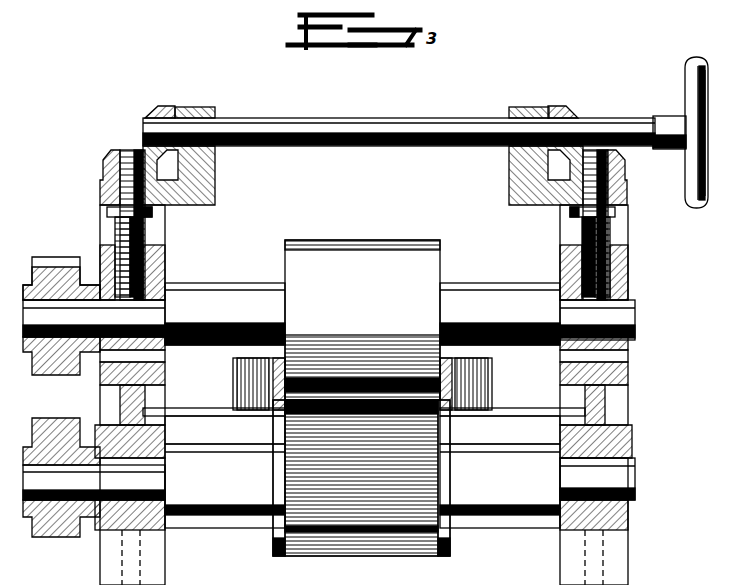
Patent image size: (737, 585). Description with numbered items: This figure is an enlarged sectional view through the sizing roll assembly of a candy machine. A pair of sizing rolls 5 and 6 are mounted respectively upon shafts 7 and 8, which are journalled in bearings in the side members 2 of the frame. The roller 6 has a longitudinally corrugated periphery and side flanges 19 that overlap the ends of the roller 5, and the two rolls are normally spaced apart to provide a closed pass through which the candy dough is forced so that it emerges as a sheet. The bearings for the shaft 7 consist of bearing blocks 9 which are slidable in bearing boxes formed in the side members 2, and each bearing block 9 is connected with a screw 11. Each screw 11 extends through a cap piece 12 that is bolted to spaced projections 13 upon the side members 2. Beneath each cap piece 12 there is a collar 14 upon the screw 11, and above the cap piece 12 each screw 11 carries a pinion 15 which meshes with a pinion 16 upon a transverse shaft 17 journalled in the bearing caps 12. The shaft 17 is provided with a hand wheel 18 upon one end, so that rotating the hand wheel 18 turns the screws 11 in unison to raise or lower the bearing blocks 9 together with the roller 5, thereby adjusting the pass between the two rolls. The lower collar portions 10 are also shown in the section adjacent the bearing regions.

The side members 2 is at (110, 378).
The sizing roll 5 is at (325, 256).
The sizing roll 6 is at (300, 548).
The shaft 7 is at (622, 312).
The shaft 8 is at (630, 470).
The bearing blocks 9 is at (105, 272).
The collar 10 is at (150, 358).
The screw 11 is at (125, 226).
The cap piece 12 is at (217, 184).
The spaced projections 13 is at (155, 228).
The collar 14 is at (72, 203).
The pinion 15 is at (112, 150).
The pinion 16 is at (152, 110).
The transverse shaft 17 is at (338, 132).
The hand wheel 18 is at (688, 70).
The side flanges 19 is at (272, 374).